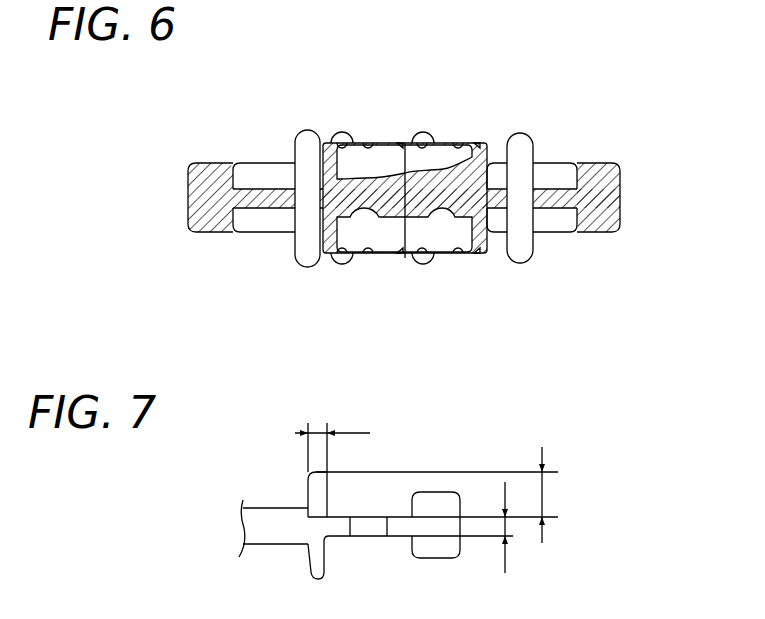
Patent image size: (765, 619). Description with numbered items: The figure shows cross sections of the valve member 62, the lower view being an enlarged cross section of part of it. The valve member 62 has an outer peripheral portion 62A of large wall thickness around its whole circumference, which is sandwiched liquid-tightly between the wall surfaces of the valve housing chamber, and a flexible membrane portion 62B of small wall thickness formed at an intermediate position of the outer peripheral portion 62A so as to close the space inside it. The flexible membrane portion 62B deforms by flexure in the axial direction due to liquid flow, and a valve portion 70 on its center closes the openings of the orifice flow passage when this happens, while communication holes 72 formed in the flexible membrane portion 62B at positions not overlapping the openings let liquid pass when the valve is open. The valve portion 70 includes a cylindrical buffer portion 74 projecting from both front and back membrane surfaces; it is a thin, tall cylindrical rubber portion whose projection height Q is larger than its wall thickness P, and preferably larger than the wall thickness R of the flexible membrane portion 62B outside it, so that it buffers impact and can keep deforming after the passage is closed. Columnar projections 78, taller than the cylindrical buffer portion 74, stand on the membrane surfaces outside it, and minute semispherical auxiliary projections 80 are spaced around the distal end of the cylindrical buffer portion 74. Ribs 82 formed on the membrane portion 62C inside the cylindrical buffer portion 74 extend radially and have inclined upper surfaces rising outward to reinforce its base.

In FIG. 6, the valve member 62 is at (420, 56).
In FIG. 6, the outer peripheral portion 62A is at (203, 172).
In FIG. 7, the outer peripheral portion 62A is at (443, 552).
In FIG. 6, the flexible membrane portion 62B is at (248, 212).
In FIG. 7, the flexible membrane portion 62B is at (338, 538).
In FIG. 6, the membrane portion 62C is at (442, 212).
In FIG. 7, the membrane portion 62C is at (265, 533).
In FIG. 6, the valve portion 70 is at (470, 126).
In FIG. 7, the valve portion 70 is at (291, 577).
In FIG. 6, the communication holes 72 is at (273, 197).
In FIG. 7, the communication holes 72 is at (372, 532).
In FIG. 6, the cylindrical buffer portion 74 is at (470, 170).
In FIG. 7, the cylindrical buffer portion 74 is at (318, 487).
In FIG. 6, the columnar projections 78 is at (525, 150).
In FIG. 6, the auxiliary projections 80 is at (368, 143).
In FIG. 6, the ribs 82 is at (443, 170).
In FIG. 7, the wall thickness of cylindrical buffer portion P is at (319, 433).
In FIG. 7, the projection height of cylindrical buffer portion Q is at (542, 502).
In FIG. 7, the wall thickness of flexible membrane portion R is at (513, 536).